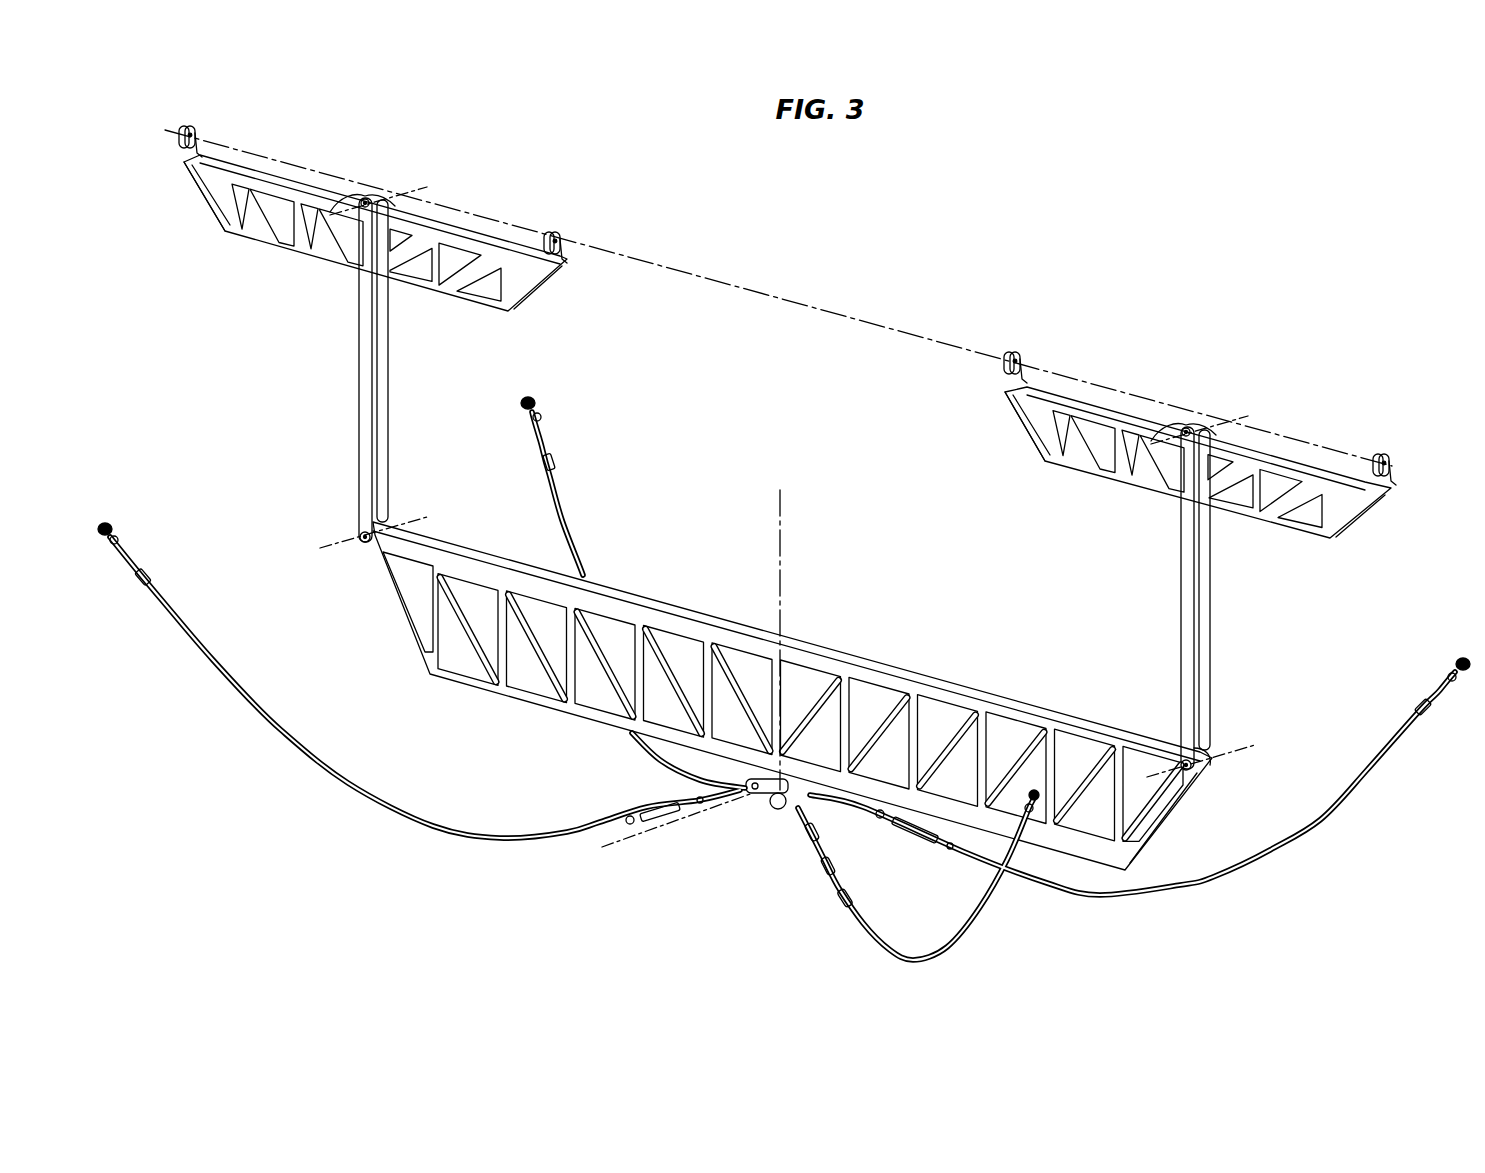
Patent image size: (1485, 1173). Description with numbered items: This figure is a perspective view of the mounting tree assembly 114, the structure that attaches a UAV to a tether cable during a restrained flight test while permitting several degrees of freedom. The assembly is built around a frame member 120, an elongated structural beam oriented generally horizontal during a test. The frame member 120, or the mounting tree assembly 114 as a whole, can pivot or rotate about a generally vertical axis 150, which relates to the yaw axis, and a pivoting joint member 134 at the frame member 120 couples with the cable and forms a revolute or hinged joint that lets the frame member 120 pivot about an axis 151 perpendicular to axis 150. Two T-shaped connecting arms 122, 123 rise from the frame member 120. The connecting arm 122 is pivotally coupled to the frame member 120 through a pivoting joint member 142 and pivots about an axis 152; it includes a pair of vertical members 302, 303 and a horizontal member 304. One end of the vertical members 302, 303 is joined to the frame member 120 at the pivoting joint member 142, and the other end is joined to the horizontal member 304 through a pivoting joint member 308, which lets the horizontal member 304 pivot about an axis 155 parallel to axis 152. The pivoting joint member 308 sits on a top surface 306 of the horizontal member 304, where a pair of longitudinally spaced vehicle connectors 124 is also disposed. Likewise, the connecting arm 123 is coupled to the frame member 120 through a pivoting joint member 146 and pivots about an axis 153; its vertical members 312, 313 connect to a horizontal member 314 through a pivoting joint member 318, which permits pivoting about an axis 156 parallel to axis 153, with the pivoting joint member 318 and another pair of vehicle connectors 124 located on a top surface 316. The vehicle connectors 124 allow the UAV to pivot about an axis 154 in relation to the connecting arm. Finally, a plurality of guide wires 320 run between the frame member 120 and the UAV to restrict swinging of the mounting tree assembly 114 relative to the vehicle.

The mounting tree assembly 114 is at (1112, 212).
The frame member 120 is at (1175, 805).
The connecting arm 122 is at (270, 323).
The connecting arm 123 is at (1358, 622).
The vehicle connectors 124 is at (193, 136).
The pivoting joint member 134 is at (772, 815).
The pivoting joint member 142 is at (345, 521).
The pivoting joint member 146 is at (1168, 728).
The axis 150 is at (783, 545).
The axis 151 is at (662, 823).
The axis 152 is at (420, 520).
The axis 153 is at (1245, 745).
The axis 154 is at (766, 285).
The axis 155 is at (418, 187).
The axis 156 is at (1240, 420).
The vertical member 302 is at (358, 390).
The vertical member 303 is at (390, 380).
The horizontal member 304 is at (533, 288).
The top surface 306 is at (190, 170).
The pivoting joint member 308 is at (335, 212).
The vertical member 312 is at (1180, 600).
The vertical member 313 is at (1210, 596).
The horizontal member 314 is at (1012, 404).
The top surface 316 is at (1050, 405).
The pivoting joint member 318 is at (1152, 437).
The guide wires 320 is at (570, 510).